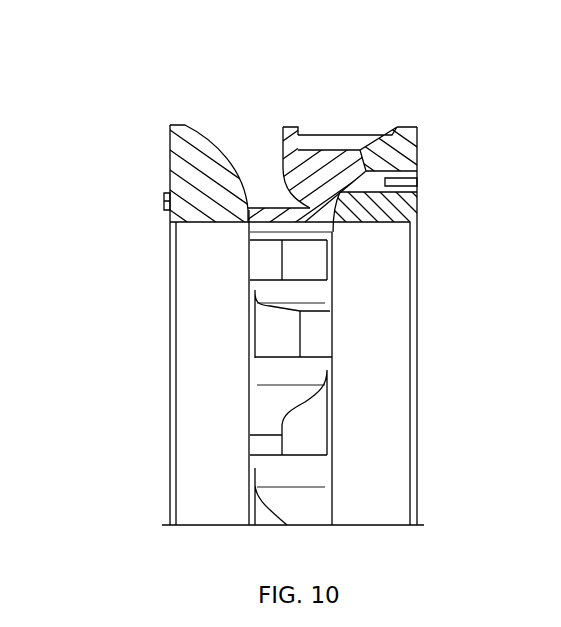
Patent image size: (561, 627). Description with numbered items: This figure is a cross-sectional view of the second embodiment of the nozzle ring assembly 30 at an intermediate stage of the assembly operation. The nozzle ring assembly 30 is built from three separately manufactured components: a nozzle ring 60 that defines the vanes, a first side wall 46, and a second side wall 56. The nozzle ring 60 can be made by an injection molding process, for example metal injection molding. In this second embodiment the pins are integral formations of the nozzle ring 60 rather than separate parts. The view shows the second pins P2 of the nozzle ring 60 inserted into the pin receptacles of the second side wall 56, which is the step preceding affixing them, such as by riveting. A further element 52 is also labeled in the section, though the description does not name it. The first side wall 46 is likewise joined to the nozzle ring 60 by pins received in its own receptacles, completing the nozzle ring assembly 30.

The nozzle ring assembly 30 is at (367, 97).
The first side wall 46 is at (183, 163).
The top plate / sealing slab 52 is at (340, 135).
The second side wall 56 is at (412, 147).
The nozzle ring 60 is at (275, 126).
The second pins P2 is at (365, 180).